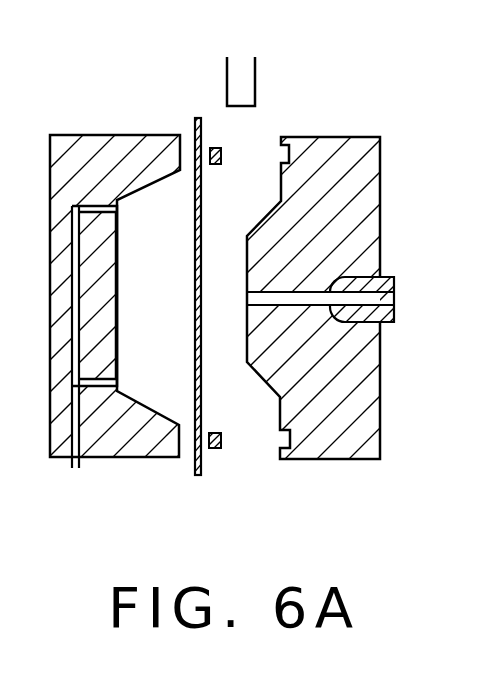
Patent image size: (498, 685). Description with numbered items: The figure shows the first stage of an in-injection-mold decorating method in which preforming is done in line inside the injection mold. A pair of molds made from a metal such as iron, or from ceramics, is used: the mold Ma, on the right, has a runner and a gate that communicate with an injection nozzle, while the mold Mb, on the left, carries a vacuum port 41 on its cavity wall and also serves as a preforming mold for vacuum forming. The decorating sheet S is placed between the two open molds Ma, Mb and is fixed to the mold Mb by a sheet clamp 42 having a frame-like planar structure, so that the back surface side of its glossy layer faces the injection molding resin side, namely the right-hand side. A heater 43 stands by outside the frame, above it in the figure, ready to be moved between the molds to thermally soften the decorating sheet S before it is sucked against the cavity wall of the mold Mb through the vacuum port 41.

The vacuum port 41 is at (118, 383).
The sheet clamp 42 is at (223, 147).
The heater 43 is at (227, 83).
The mold Mb is at (140, 447).
The mold Ma is at (322, 450).
The decorating sheet S is at (200, 472).